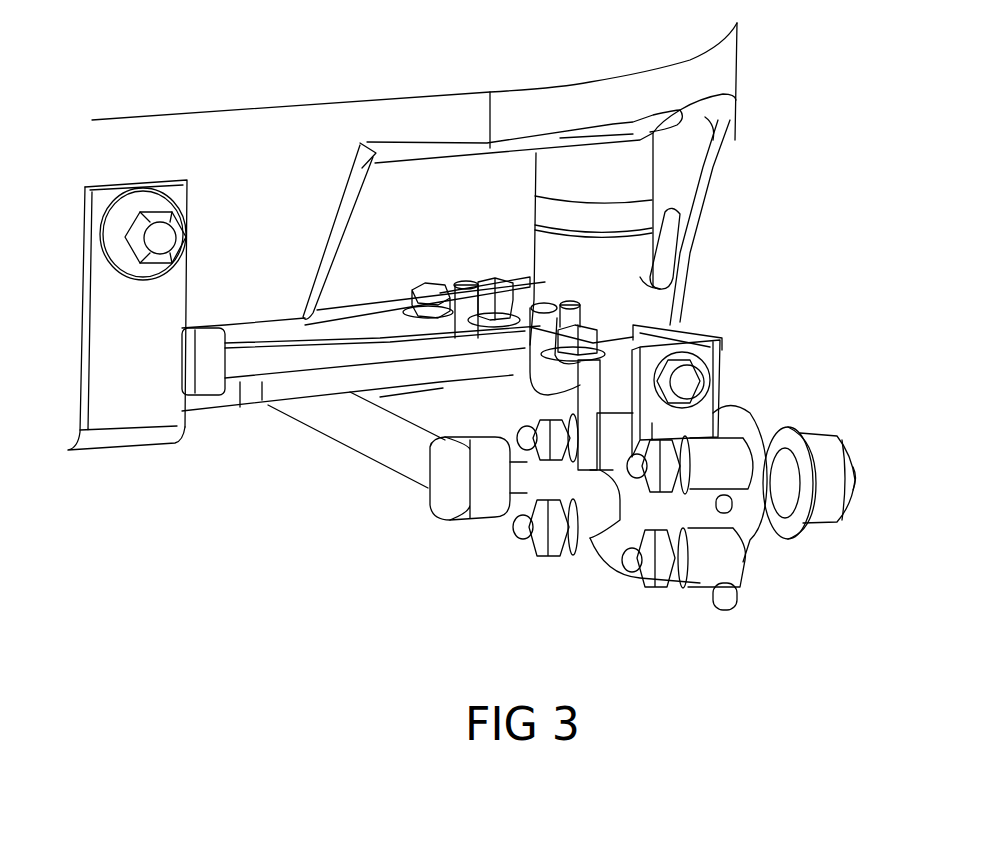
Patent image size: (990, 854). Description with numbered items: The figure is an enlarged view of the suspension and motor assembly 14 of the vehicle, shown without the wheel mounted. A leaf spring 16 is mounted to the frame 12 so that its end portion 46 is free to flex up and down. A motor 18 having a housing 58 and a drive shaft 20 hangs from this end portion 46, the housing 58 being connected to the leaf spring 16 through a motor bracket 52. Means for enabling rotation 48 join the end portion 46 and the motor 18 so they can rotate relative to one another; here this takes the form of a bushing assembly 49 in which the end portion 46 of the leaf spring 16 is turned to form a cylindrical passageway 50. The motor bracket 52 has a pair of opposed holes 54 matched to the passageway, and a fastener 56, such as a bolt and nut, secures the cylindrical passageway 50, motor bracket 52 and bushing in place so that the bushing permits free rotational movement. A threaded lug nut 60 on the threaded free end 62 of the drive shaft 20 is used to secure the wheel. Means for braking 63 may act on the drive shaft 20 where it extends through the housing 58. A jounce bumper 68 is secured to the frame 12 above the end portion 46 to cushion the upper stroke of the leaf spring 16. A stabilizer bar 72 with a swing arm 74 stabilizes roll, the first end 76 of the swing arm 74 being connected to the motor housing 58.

The frame 12 is at (267, 182).
The suspension and motor assembly 14 is at (898, 580).
The leaf spring 16 is at (290, 388).
The motor 18 is at (757, 522).
The drive shaft 20 is at (780, 468).
The end portion 46 is at (537, 305).
The means for enabling rotation 48 is at (680, 320).
The bushing assembly 49 is at (675, 208).
The cylindrical passageway 50 is at (690, 322).
The motor bracket 52 is at (722, 403).
The opposed holes 54 is at (708, 400).
The fastener 56 is at (690, 375).
The housing 58 is at (733, 423).
The threaded lug nut 60 is at (835, 495).
The threaded free end 62 is at (857, 482).
The means for braking 63 is at (610, 508).
The jounce bumper 68 is at (632, 166).
The stabilizer bar 72 is at (360, 428).
The swing arm 74 is at (397, 450).
The first end 76 is at (443, 487).